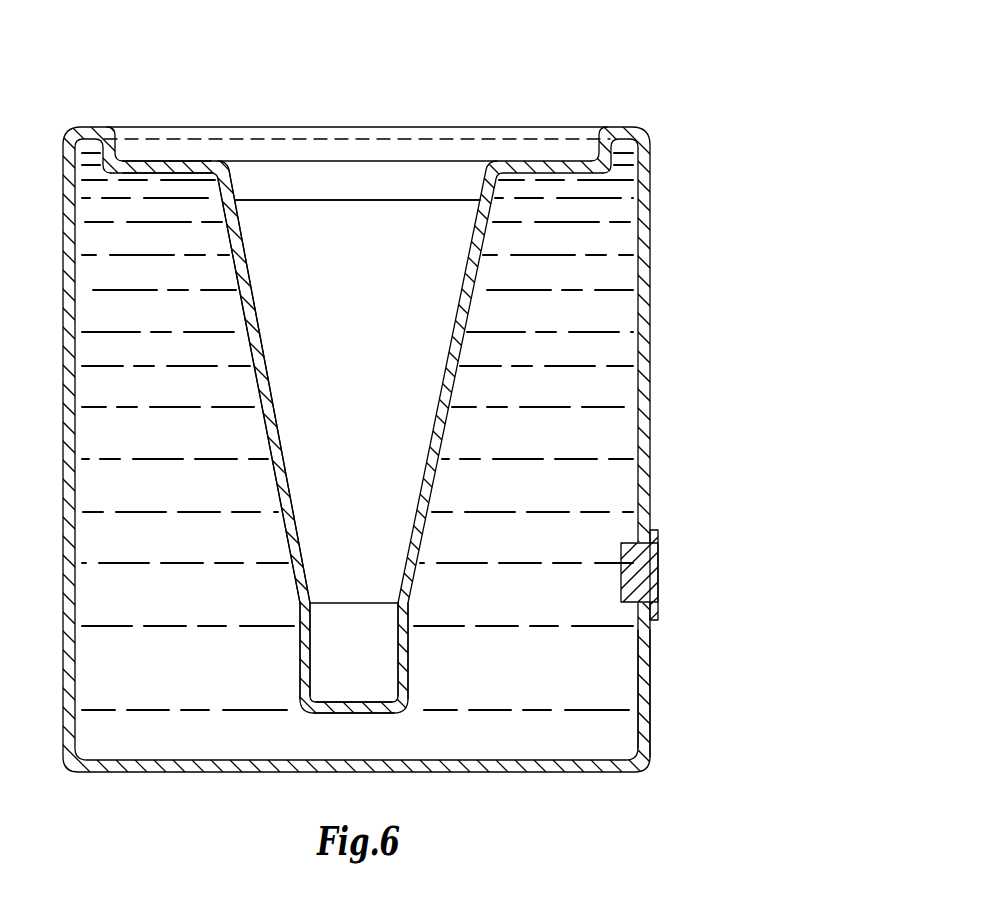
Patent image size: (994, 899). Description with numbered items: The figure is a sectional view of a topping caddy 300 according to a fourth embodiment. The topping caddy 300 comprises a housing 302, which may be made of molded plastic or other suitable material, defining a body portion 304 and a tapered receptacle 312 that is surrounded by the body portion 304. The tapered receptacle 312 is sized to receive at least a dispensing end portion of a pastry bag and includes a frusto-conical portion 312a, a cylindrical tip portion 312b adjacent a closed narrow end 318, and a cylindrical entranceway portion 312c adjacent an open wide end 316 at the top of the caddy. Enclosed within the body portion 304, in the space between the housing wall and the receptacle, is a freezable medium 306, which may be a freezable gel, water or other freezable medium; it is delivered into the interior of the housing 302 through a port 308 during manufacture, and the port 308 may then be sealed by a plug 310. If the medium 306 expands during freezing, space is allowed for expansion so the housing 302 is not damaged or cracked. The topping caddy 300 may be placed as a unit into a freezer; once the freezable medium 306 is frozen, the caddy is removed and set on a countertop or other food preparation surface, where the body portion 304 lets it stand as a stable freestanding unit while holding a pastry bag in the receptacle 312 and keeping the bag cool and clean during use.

The topping caddy 300 is at (497, 412).
The housing 302 is at (655, 222).
The body portion 304 is at (645, 688).
The freezable medium 306 is at (617, 350).
The port 308 is at (647, 568).
The plug 310 is at (658, 560).
The tapered receptacle 312 is at (497, 438).
The frusto-conical portion 312a is at (280, 447).
The cylindrical tip portion 312b is at (310, 652).
The cylindrical entranceway portion 312c is at (232, 186).
The open wide end 316 is at (387, 168).
The closed narrow end 318 is at (368, 714).